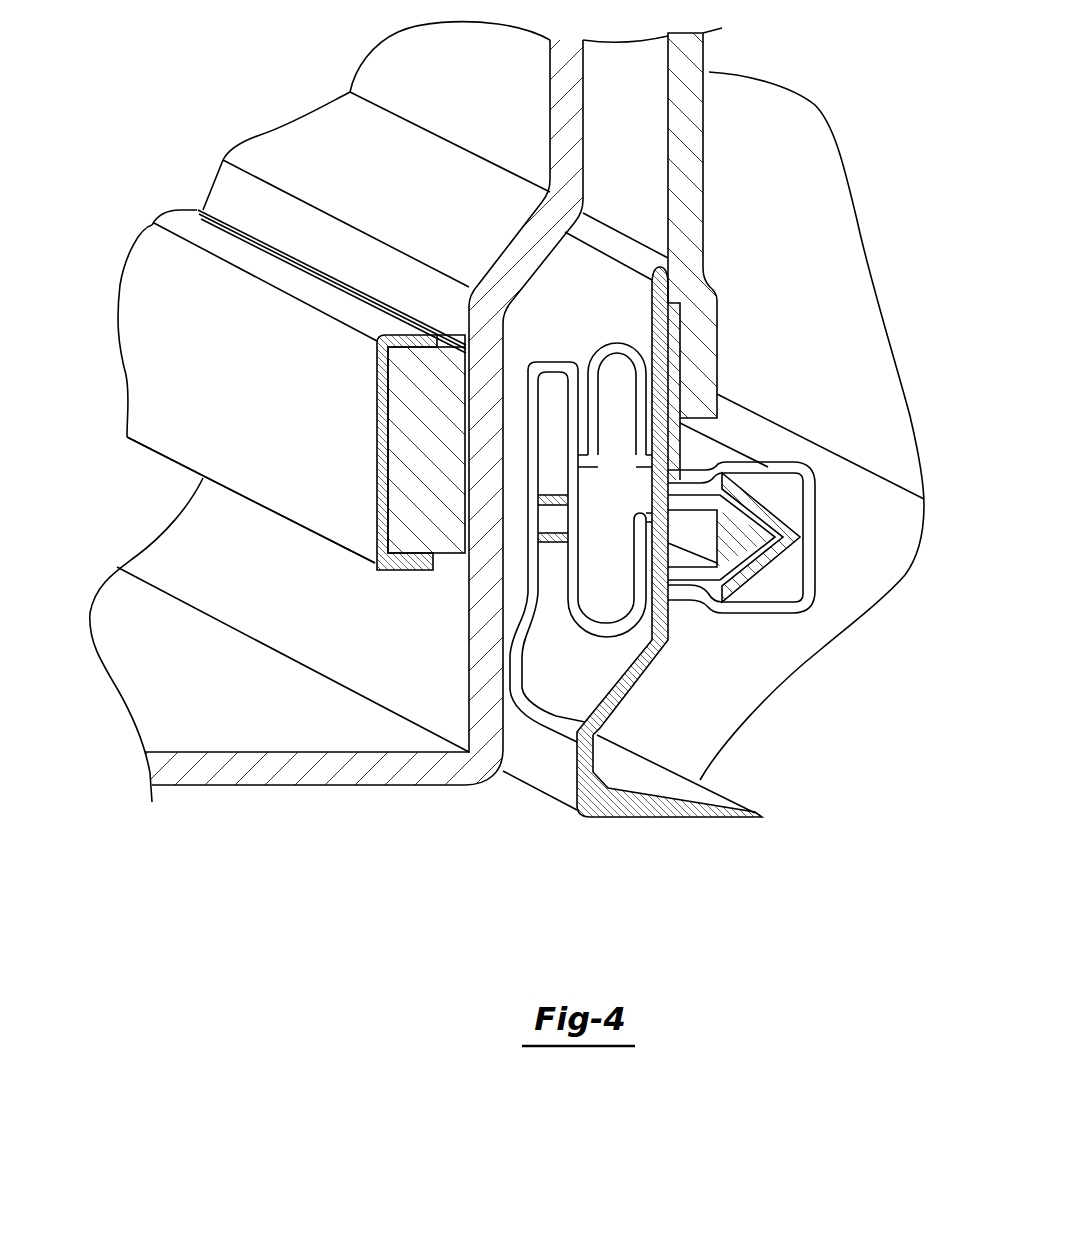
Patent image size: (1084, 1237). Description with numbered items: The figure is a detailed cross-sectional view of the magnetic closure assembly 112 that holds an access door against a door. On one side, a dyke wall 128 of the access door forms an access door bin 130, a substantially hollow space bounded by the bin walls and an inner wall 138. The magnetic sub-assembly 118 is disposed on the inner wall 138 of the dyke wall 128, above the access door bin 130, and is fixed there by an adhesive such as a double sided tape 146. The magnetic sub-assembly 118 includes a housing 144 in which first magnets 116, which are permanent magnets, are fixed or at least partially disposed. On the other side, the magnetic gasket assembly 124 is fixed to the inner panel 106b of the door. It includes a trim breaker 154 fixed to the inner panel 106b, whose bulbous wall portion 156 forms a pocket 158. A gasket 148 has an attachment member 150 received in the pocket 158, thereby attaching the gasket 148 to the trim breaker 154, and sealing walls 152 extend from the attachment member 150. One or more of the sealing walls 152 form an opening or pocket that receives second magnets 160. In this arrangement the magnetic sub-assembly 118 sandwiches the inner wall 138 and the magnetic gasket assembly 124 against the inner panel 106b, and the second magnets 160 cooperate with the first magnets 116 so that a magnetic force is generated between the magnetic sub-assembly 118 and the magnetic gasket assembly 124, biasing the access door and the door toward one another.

The inner panel 106b is at (703, 127).
The magnetic closure assembly 112 is at (835, 850).
The first magnets 116 is at (411, 478).
The magnetic sub-assembly 118 is at (132, 222).
The magnetic gasket assembly 124 is at (686, 326).
The dyke wall 128 is at (230, 182).
The access door bin 130 is at (124, 608).
The inner wall 138 is at (198, 542).
The housing 144 is at (147, 390).
The double sided tape 146 is at (466, 402).
The gasket 148 is at (543, 738).
The attachment member 150 is at (757, 507).
The sealing walls 152 is at (640, 607).
The trim breaker 154 is at (818, 523).
The bulbous wall portion 156 is at (803, 553).
The pocket 158 is at (787, 573).
The second magnets 160 is at (553, 449).